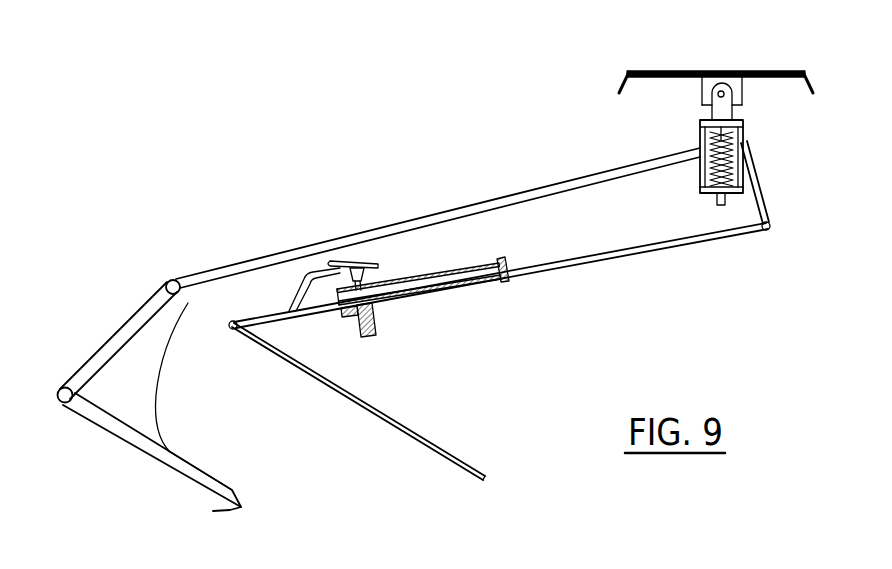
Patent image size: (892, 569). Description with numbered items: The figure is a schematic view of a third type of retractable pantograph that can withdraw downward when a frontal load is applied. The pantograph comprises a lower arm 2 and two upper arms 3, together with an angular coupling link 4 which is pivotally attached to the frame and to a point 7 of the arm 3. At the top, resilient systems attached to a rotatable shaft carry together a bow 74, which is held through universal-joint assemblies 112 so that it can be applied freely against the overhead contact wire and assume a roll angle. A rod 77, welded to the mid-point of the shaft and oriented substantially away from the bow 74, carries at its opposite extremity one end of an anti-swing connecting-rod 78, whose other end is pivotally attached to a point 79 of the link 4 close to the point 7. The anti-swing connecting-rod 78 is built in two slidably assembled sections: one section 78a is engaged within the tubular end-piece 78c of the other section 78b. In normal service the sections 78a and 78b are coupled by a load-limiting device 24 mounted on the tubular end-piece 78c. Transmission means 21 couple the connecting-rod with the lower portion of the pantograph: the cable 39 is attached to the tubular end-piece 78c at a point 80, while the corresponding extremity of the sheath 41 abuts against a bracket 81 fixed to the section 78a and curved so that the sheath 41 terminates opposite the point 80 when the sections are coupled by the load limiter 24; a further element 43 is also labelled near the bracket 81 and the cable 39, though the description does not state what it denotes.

The lower arm 2 is at (170, 476).
The upper arm 3 is at (360, 237).
The angular coupling link 4 is at (413, 436).
The point of the arm 7 is at (171, 279).
The transmission means 21 is at (152, 379).
The load-limiting device 24 is at (388, 321).
The cable 39 is at (340, 310).
The sheath 41 is at (246, 272).
The clamp plate 43 is at (336, 267).
The bow 74 is at (748, 71).
The rod 77 is at (760, 182).
The anti-swing connecting-rod 78 is at (502, 304).
The connecting-rod section 78a is at (291, 322).
The connecting-rod section 78b is at (680, 241).
The tubular end-piece 78c is at (445, 266).
The point of the link 79 is at (230, 330).
The point 80 is at (377, 282).
The bracket 81 is at (305, 276).
The universal-joint assembly 112 is at (716, 95).